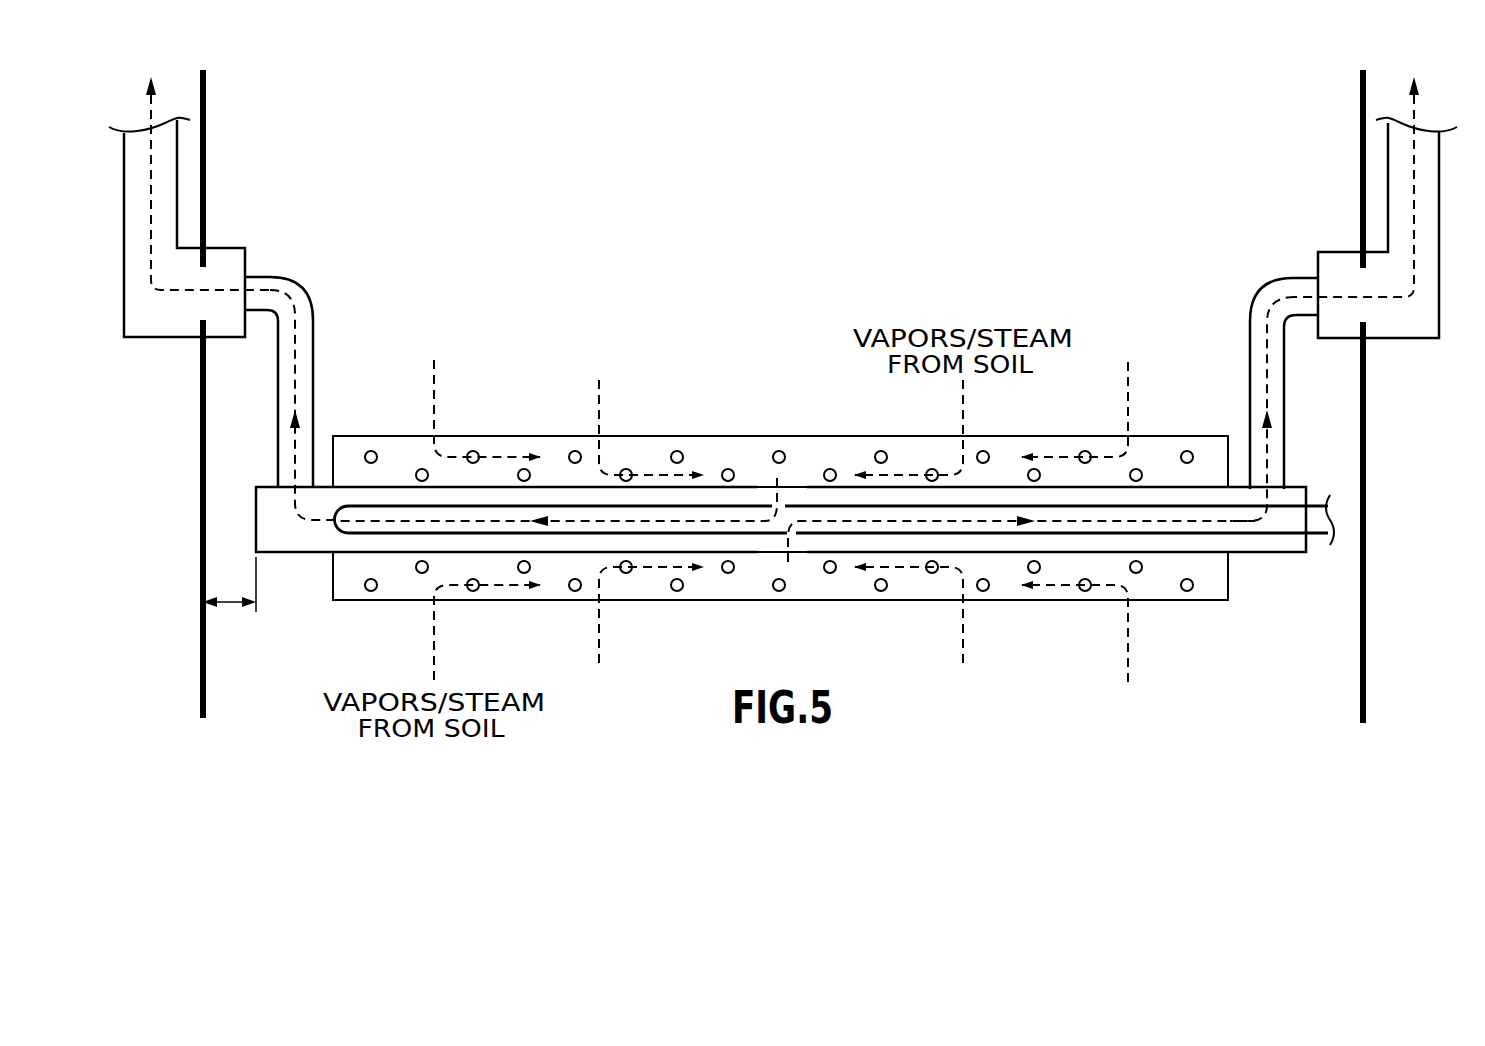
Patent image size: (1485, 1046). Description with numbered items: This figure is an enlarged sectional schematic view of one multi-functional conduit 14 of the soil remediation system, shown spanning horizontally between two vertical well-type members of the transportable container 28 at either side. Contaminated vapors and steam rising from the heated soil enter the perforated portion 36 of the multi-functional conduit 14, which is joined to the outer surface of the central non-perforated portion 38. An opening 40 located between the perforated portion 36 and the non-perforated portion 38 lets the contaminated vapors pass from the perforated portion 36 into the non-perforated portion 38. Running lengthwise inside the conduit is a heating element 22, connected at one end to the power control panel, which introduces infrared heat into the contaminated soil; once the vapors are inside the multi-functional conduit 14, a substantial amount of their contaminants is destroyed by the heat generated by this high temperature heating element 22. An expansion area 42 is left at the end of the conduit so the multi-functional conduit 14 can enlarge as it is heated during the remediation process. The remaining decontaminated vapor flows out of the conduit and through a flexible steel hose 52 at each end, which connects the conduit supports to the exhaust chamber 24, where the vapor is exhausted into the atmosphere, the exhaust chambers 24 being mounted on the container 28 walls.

The multi-functional conduit 14 is at (757, 436).
The heating element 22 is at (1275, 540).
The exhaust chamber 24 is at (235, 248).
The transportable container 28 is at (206, 145).
The perforated portion 36 is at (643, 450).
The non-perforated portion 38 is at (556, 540).
The opening 40 is at (791, 488).
The expansion area 42 is at (230, 607).
The flexible steel hose 52 is at (314, 328).